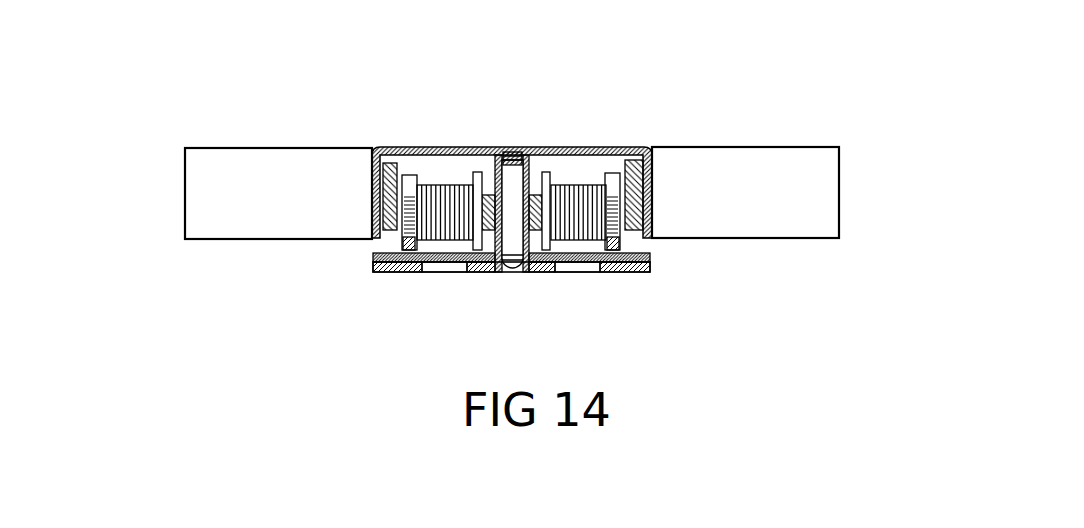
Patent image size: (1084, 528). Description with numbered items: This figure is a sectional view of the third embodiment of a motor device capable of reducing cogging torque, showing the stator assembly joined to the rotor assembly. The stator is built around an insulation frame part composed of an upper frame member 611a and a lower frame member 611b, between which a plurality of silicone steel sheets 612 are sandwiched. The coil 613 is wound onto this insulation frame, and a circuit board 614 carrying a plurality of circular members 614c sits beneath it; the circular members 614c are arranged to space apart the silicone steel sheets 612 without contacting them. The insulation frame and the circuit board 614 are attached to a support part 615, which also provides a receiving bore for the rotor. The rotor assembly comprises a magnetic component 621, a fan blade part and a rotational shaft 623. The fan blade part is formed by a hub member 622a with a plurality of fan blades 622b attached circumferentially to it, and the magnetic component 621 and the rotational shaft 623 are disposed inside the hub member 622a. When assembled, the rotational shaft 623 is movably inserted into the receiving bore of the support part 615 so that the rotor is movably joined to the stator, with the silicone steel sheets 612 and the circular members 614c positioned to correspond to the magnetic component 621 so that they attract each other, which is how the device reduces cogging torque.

The upper frame member 611a is at (380, 148).
The lower frame member 611b is at (650, 263).
The silicone steel sheets 612 is at (650, 223).
The coil 613 is at (448, 190).
The circuit board 614 is at (427, 267).
The circular members 614c is at (404, 241).
The support part 615 is at (640, 274).
The magnetic component 621 is at (653, 157).
The hub member 622a is at (560, 152).
The fan blades 622b is at (227, 158).
The rotational shaft 623 is at (515, 228).